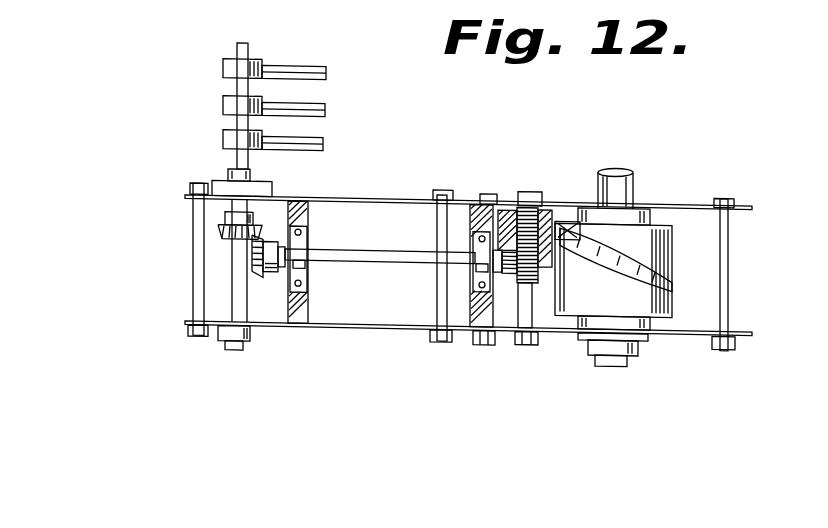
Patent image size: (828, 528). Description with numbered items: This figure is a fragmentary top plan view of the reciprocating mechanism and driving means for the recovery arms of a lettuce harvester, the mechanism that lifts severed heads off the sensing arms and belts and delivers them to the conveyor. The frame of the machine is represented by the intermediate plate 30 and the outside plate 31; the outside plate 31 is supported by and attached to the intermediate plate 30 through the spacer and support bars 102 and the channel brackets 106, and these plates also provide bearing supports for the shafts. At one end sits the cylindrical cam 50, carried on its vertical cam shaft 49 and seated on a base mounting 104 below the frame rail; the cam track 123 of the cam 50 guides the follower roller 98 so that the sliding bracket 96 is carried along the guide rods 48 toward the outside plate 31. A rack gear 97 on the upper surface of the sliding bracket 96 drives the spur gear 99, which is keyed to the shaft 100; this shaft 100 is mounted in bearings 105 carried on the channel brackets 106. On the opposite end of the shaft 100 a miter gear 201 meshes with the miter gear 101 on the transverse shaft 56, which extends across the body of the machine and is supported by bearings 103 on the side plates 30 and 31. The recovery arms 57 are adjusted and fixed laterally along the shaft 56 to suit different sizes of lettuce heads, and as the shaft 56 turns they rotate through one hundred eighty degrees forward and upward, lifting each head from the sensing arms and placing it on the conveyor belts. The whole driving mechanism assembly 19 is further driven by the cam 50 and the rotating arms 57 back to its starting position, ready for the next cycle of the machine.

The driving mechanism assembly 19 is at (318, 353).
The intermediate plate 30 is at (650, 205).
The outside plate 31 is at (358, 328).
The guide rods 48 is at (525, 347).
The drive shaft 49 is at (634, 180).
The cylindrical cam 50 is at (672, 258).
The shaft 56 is at (240, 262).
The recovery arms 57 is at (222, 139).
The sliding bracket 96 is at (560, 240).
The rack gear 97 is at (510, 210).
The follower roller 98 is at (567, 240).
The spur gear 99 is at (513, 214).
The shaft 100 is at (337, 250).
The miter gear 101 is at (227, 220).
The spacer and support bars 102 is at (192, 290).
The bearings 103 is at (223, 181).
The base bearing 104 is at (585, 348).
The bearings 105 is at (480, 273).
The channel brackets 106 is at (310, 215).
The cam track 123 is at (672, 292).
The miter gear 201 is at (268, 272).